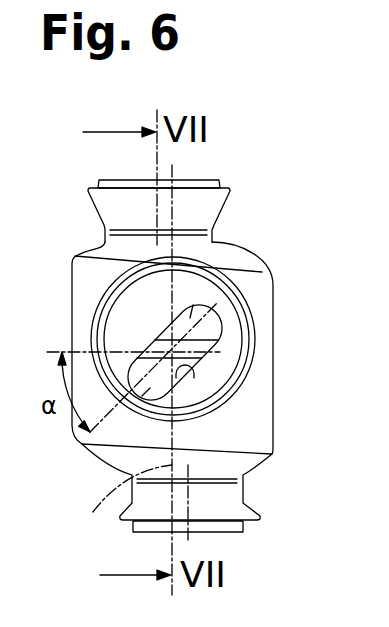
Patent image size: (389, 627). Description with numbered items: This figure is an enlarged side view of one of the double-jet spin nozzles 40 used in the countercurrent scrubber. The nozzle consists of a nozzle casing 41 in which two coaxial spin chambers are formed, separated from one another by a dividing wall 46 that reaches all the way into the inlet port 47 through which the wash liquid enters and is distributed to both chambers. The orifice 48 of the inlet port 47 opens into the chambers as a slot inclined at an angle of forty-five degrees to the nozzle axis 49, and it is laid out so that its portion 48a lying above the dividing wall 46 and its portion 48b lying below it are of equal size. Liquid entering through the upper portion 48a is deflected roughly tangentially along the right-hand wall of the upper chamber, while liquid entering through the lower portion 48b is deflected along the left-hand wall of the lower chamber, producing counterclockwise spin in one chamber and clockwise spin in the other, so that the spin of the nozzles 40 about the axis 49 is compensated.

The double-jet nozzle 40 is at (244, 230).
The nozzle casing 41 is at (262, 327).
The dividing wall 46 is at (150, 340).
The inlet port 47 is at (245, 362).
The orifice of the inlet port 48 is at (186, 378).
The upper portion of the orifice 48a is at (190, 305).
The lower portion of the orifice 48b is at (150, 388).
The nozzle axis 49 is at (121, 505).